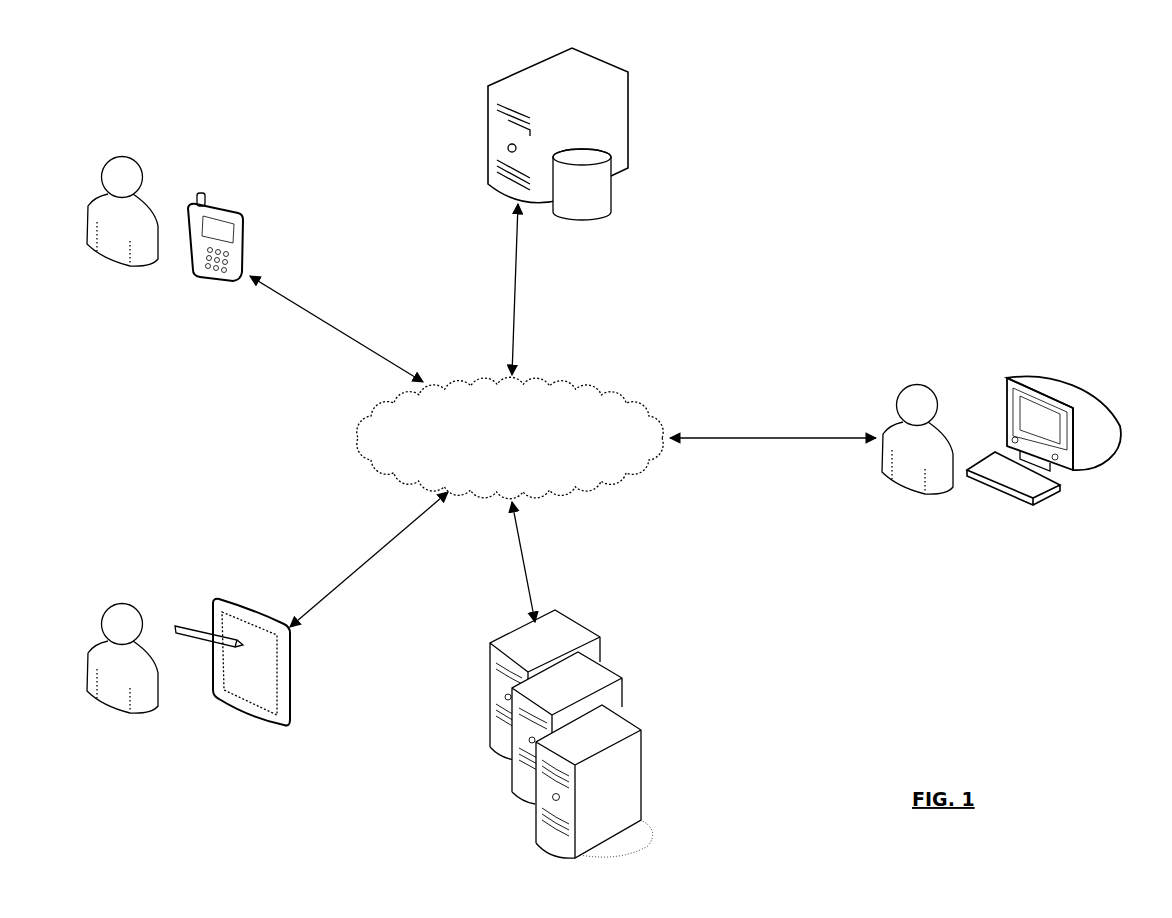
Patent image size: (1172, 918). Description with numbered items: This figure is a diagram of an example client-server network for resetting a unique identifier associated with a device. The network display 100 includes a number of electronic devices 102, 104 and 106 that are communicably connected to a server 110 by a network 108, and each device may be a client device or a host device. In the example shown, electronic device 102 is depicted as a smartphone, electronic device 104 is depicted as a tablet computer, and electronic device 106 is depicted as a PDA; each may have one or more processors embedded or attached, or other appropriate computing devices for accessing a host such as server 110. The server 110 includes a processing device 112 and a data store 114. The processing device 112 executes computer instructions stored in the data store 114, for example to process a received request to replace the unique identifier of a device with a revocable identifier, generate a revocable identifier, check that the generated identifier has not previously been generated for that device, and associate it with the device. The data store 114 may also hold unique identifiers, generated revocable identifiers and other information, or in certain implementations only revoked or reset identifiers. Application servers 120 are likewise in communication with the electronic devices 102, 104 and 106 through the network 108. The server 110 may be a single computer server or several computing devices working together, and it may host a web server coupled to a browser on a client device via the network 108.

The network display 100 is at (890, 114).
The electronic device 102 is at (228, 210).
The electronic device 104 is at (1078, 384).
The electronic device 106 is at (227, 598).
The network 108 is at (548, 378).
The server 110 is at (488, 209).
The processing device 112 is at (596, 55).
The data store 114 is at (612, 222).
The application servers 120 is at (484, 812).